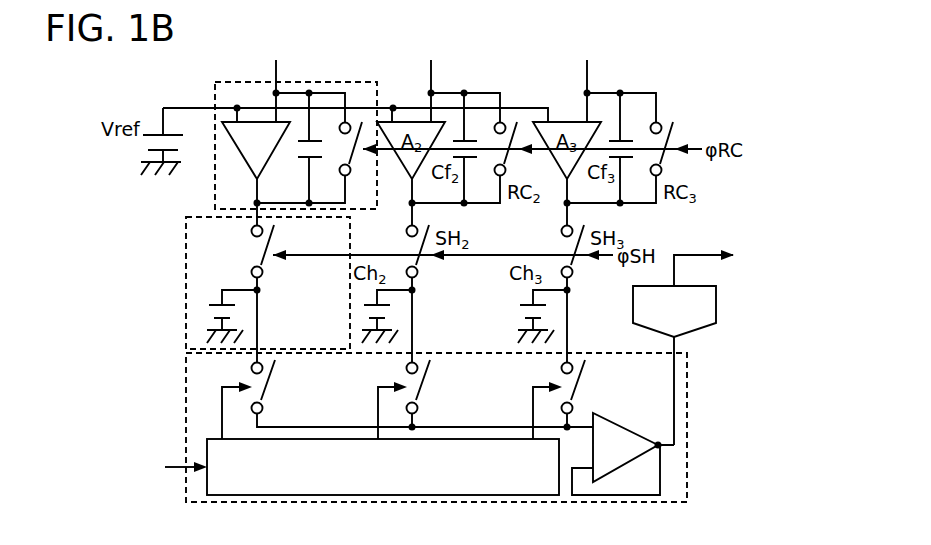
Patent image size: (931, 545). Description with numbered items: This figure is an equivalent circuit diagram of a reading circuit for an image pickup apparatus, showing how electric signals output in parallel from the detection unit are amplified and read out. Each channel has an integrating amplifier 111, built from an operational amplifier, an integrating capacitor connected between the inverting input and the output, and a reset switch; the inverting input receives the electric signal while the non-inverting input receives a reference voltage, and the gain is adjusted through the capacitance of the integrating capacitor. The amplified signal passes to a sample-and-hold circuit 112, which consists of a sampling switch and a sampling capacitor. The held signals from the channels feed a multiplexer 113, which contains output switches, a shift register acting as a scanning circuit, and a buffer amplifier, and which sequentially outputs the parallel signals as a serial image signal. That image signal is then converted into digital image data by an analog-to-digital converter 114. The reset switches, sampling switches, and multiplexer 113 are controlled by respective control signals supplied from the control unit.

The integrating amplifier 111 is at (215, 94).
The sample-and-hold circuit 112 is at (186, 237).
The multiplexer 113 is at (186, 377).
The analog-to-digital converter 114 is at (695, 318).